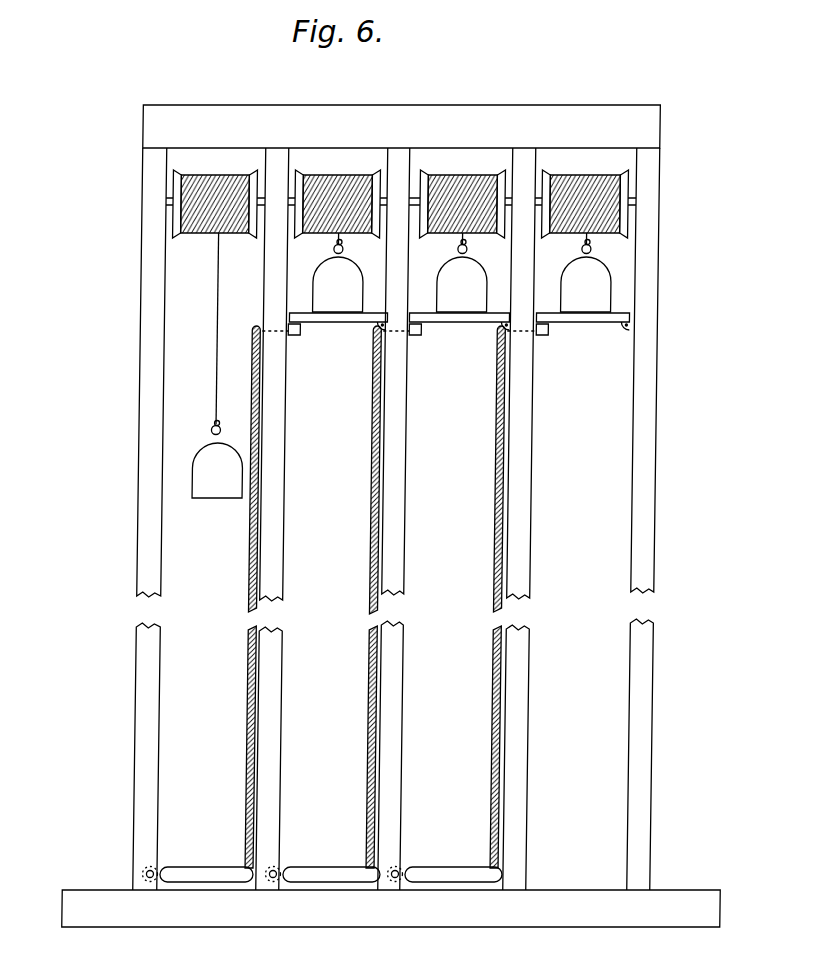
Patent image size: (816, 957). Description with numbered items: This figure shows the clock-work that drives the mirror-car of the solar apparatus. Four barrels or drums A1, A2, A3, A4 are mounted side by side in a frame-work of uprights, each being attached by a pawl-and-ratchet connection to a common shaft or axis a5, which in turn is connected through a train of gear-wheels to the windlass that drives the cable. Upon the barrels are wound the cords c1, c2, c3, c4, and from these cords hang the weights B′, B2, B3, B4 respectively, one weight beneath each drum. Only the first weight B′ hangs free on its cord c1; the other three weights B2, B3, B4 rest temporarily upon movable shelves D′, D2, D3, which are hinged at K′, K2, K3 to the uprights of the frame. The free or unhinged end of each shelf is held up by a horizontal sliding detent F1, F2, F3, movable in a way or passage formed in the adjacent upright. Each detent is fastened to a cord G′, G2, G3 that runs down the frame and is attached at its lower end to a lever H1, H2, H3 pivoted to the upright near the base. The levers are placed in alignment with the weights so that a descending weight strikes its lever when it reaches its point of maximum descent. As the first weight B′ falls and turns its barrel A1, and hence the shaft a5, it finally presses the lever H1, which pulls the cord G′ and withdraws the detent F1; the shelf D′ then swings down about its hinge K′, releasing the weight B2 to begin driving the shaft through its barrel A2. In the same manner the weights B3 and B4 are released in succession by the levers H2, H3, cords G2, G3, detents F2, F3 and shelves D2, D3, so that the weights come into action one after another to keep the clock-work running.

The barrel or drum A1 is at (222, 182).
The barrel or drum A2 is at (344, 182).
The barrel or drum A3 is at (464, 182).
The barrel or drum A4 is at (584, 182).
The common shaft or axis a5 is at (167, 194).
The cord c1 is at (227, 334).
The cord c2 is at (347, 240).
The cord c3 is at (471, 240).
The cord c4 is at (595, 240).
The weight B′ is at (217, 470).
The weight B2 is at (338, 284).
The weight B3 is at (462, 284).
The weight B4 is at (586, 284).
The movable shelf D′ is at (342, 322).
The movable shelf D2 is at (468, 322).
The movable shelf D3 is at (588, 322).
The horizontal sliding detent F1 is at (294, 338).
The horizontal sliding detent F2 is at (416, 338).
The horizontal sliding detent F3 is at (543, 338).
The hinge K′ is at (391, 333).
The hinge K2 is at (515, 316).
The hinge K3 is at (632, 328).
The cord G′ is at (255, 404).
The cord G2 is at (376, 420).
The cord G3 is at (500, 408).
The lever H1 is at (188, 867).
The lever H2 is at (316, 869).
The lever H3 is at (444, 869).